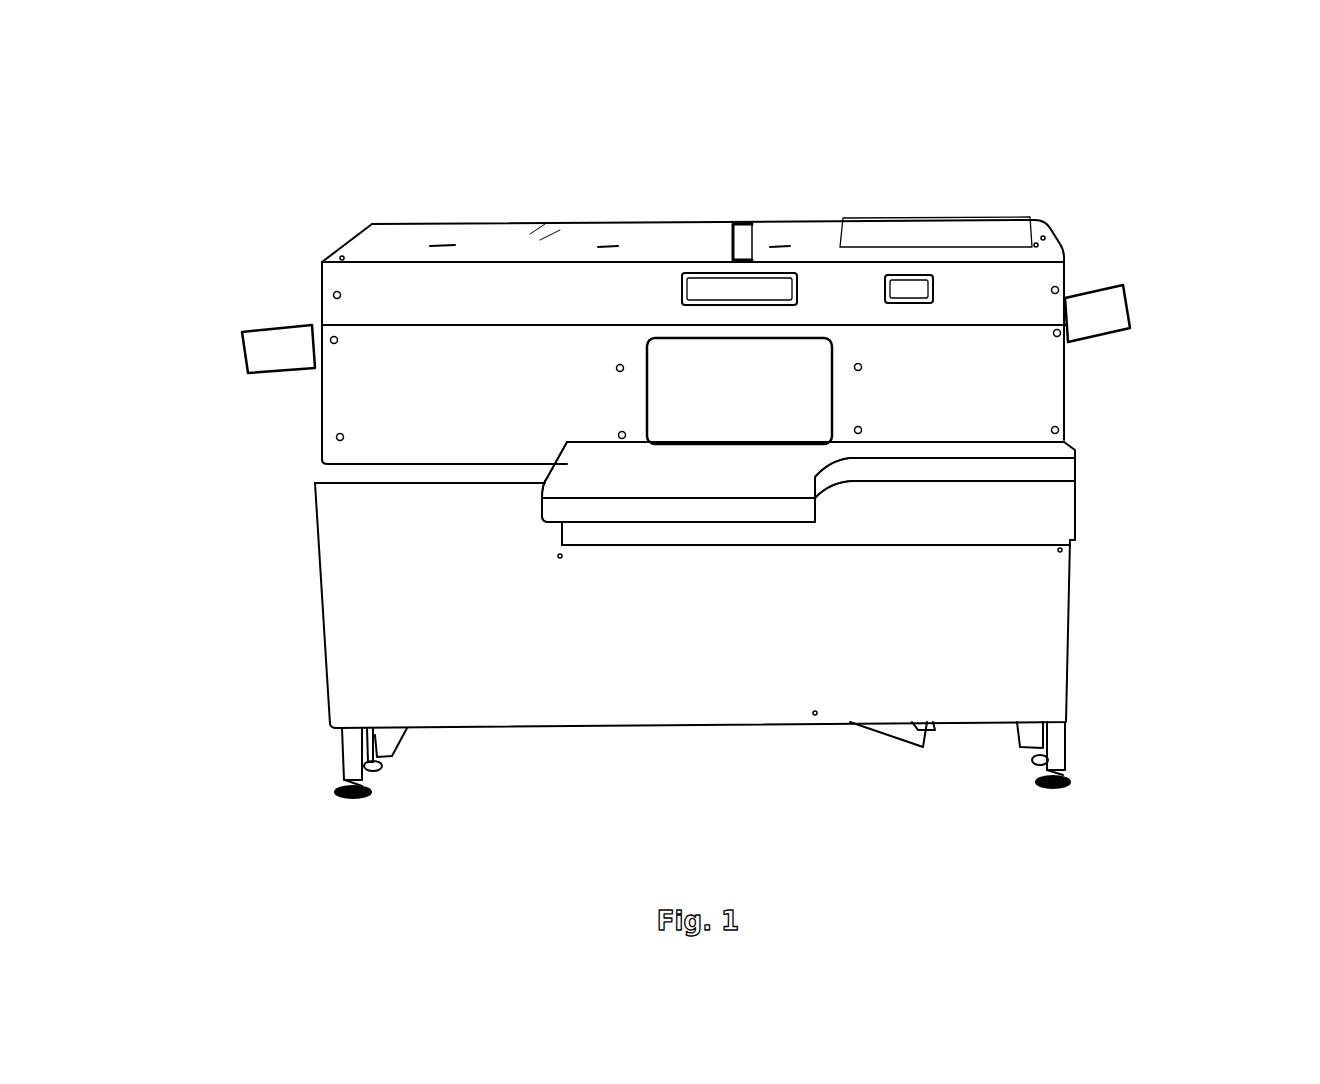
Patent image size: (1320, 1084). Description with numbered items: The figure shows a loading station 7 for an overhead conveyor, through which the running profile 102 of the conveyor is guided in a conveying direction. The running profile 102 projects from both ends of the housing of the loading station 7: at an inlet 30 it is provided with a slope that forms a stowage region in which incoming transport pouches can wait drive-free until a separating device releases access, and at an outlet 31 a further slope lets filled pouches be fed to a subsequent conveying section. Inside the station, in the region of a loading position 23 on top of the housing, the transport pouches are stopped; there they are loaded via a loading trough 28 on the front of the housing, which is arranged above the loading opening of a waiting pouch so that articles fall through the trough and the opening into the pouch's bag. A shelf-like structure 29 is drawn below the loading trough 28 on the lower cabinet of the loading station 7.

The loading station 7 is at (268, 153).
The running profile 102 is at (278, 343).
The loading position 23 is at (742, 203).
The loading trough 28 is at (688, 387).
The support shelf 29 is at (652, 475).
The inlet 30 is at (1108, 357).
The outlet 31 is at (282, 394).